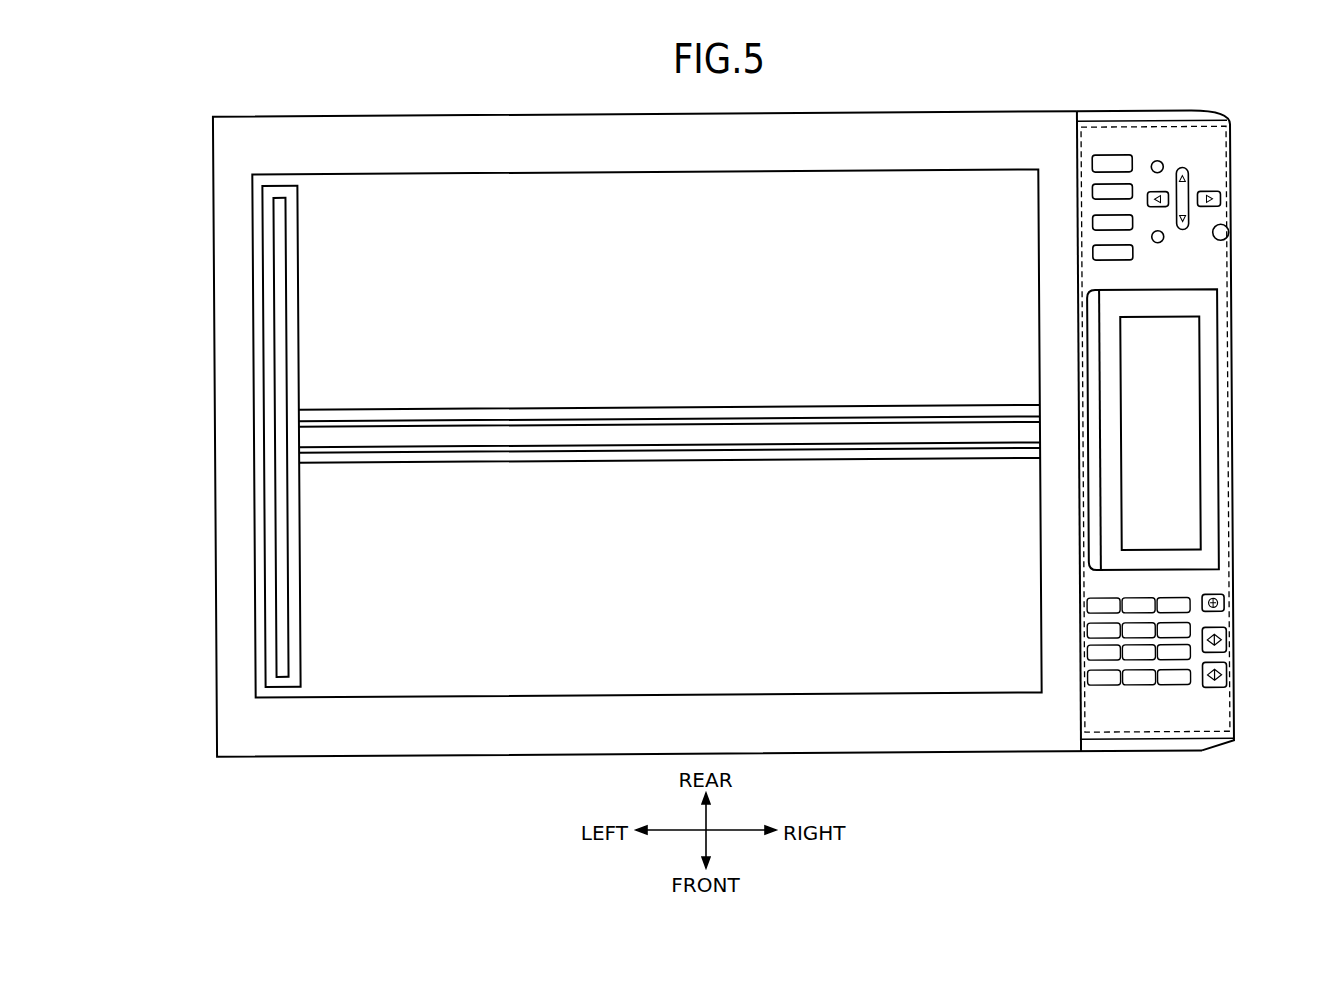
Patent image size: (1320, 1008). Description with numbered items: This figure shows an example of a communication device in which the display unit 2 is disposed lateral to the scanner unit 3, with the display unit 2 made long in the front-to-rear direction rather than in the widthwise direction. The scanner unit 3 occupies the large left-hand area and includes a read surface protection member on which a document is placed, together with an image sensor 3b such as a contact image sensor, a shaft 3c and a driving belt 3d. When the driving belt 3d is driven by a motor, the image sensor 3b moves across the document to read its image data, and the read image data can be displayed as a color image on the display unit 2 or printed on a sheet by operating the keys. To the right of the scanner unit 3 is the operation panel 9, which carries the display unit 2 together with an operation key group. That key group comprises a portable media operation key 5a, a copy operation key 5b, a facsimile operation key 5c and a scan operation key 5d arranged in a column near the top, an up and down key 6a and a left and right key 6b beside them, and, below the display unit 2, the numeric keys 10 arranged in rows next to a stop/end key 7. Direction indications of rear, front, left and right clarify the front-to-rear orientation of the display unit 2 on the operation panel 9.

The display unit 2 is at (1177, 392).
The scanner unit 3 is at (945, 183).
The image sensor 3b is at (274, 544).
The shaft 3c is at (975, 407).
The driving belt 3d is at (953, 450).
The portable media operation key 5a is at (1111, 165).
The copy operation key 5b is at (1130, 196).
The facsimile operation key 5c is at (1132, 225).
The scan operation key 5d is at (1134, 253).
The up and down key 6a is at (1187, 222).
The left and right key 6b is at (1160, 208).
The stop/end key 7 is at (1213, 604).
The operation panel 9 is at (1222, 716).
The numeric keys 10 is at (1178, 606).